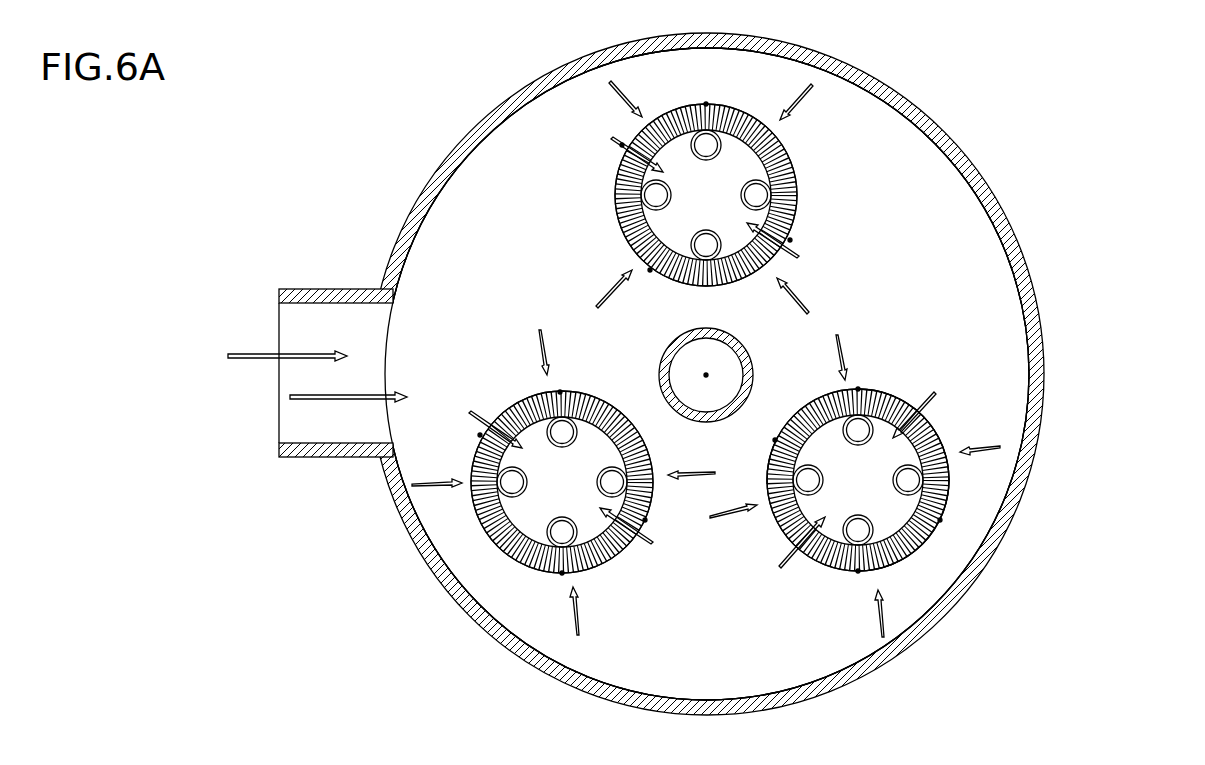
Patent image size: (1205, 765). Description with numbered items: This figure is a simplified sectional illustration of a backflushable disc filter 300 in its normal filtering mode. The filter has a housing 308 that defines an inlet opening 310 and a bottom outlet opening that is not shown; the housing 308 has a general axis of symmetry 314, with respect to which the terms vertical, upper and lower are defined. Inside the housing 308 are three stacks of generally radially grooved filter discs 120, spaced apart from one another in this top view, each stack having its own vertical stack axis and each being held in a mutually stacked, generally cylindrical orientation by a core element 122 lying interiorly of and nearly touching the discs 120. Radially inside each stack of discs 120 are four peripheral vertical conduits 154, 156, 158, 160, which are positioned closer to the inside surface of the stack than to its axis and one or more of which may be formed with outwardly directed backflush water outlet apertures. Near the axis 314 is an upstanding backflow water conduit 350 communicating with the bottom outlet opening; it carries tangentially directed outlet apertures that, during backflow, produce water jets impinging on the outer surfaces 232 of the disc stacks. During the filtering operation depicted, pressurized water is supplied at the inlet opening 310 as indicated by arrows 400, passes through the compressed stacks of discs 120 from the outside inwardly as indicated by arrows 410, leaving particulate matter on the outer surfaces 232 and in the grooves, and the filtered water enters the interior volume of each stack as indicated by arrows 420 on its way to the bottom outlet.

The backflushable disc filter 300 is at (1063, 158).
The housing 308 is at (1030, 274).
The inlet opening 310 is at (290, 433).
The arrows 400 is at (300, 400).
The arrows 410 is at (797, 302).
The arrows 420 is at (792, 248).
The filter discs 120 is at (617, 180).
The core element 122 is at (630, 236).
The outer surfaces 232 is at (790, 152).
The upstanding backflow water conduit 350 is at (750, 388).
The axis of symmetry 314 is at (706, 375).
The peripheral vertical conduit 154 is at (888, 402).
The peripheral vertical conduit 156 is at (775, 462).
The peripheral vertical conduit 158 is at (875, 535).
The peripheral vertical conduit 160 is at (928, 458).